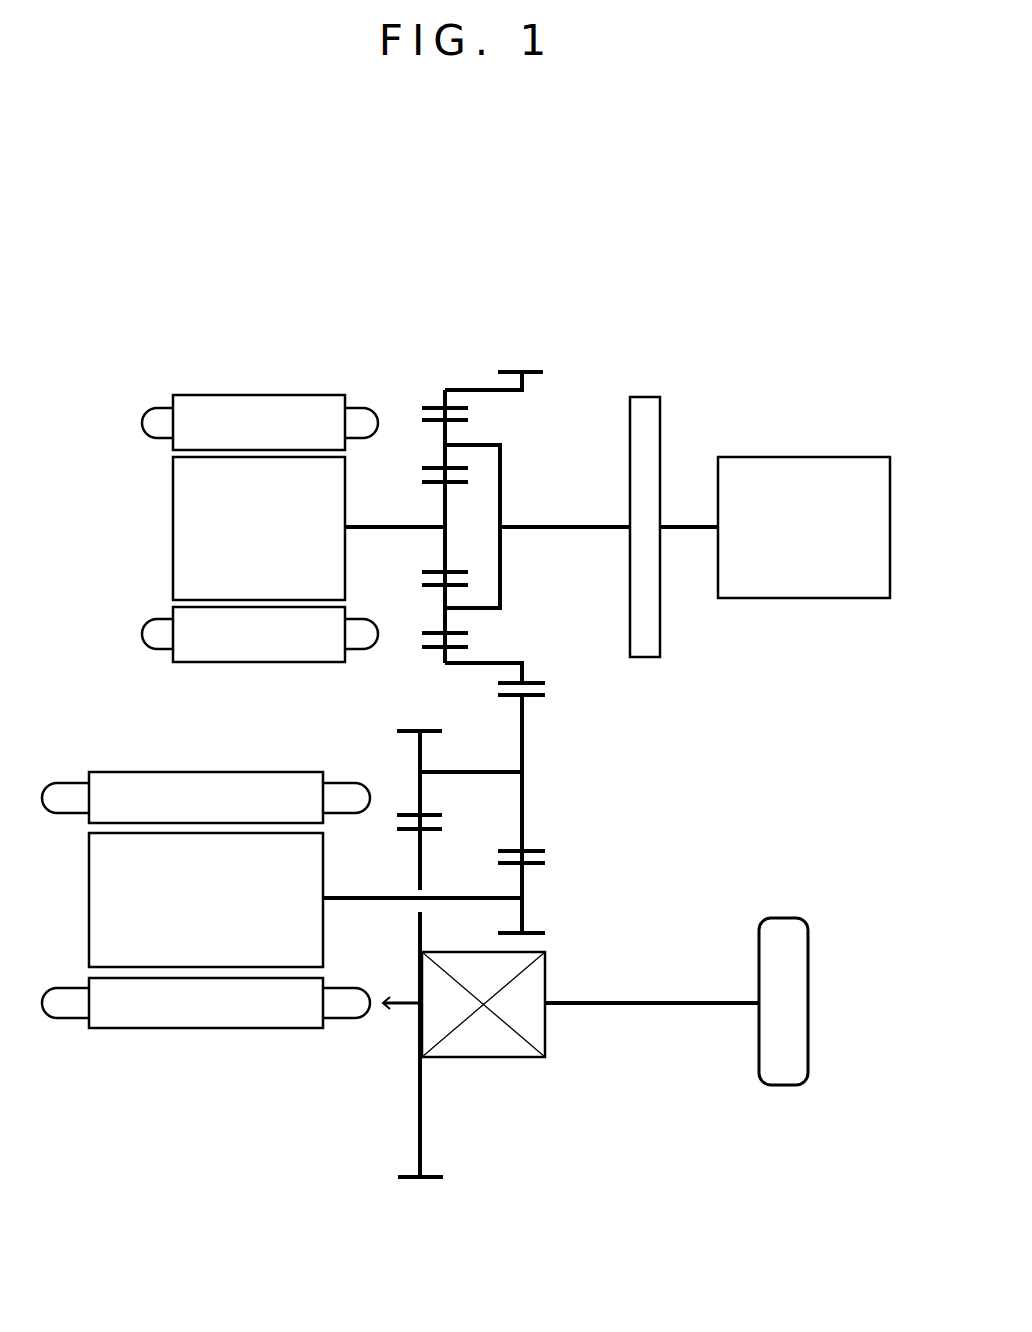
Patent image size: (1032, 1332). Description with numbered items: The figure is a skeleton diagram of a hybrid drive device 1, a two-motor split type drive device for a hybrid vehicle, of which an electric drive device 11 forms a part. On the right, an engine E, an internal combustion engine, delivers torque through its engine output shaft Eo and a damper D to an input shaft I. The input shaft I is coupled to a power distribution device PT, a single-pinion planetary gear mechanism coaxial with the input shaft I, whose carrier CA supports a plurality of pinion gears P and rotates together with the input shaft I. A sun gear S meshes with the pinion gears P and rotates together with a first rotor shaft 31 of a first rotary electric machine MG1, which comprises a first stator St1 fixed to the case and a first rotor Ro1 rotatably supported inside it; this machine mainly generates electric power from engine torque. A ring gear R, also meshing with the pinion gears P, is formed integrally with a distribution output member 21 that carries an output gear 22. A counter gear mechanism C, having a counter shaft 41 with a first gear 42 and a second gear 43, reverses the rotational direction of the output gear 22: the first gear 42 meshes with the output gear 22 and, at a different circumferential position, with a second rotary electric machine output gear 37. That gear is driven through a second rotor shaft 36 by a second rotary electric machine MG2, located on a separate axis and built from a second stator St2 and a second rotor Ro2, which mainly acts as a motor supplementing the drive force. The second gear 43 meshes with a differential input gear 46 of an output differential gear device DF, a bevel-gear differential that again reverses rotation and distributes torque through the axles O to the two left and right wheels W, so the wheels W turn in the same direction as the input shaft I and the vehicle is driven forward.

The hybrid drive device 1 is at (235, 278).
The electric drive device 11 is at (523, 280).
The first rotary electric machine MG1 is at (202, 378).
The first stator St1 is at (260, 528).
The first rotor Ro1 is at (259, 528).
The first rotor shaft 31 is at (402, 530).
The power distribution device PT is at (432, 377).
The ring gear R is at (455, 403).
The output gear 22 is at (533, 367).
The pinion gears P is at (445, 443).
The sun gear S is at (433, 487).
The carrier CA is at (500, 483).
The distribution output member 21 is at (460, 670).
The input shaft I is at (562, 527).
The damper D is at (645, 392).
The engine output shaft Eo is at (685, 527).
The engine E is at (792, 457).
The counter gear mechanism C is at (556, 730).
The first gear 42 is at (522, 793).
The second rotary electric machine output gear 37 is at (522, 878).
The counter shaft 41 is at (465, 772).
The second gear 43 is at (418, 755).
The differential input gear 46 is at (418, 853).
The second rotary electric machine MG2 is at (177, 762).
The second stator St2 is at (206, 900).
The second rotor Ro2 is at (206, 900).
The second rotor shaft 36 is at (390, 900).
The output differential gear device DF is at (495, 1057).
The axles O is at (608, 1003).
The wheels W is at (778, 928).